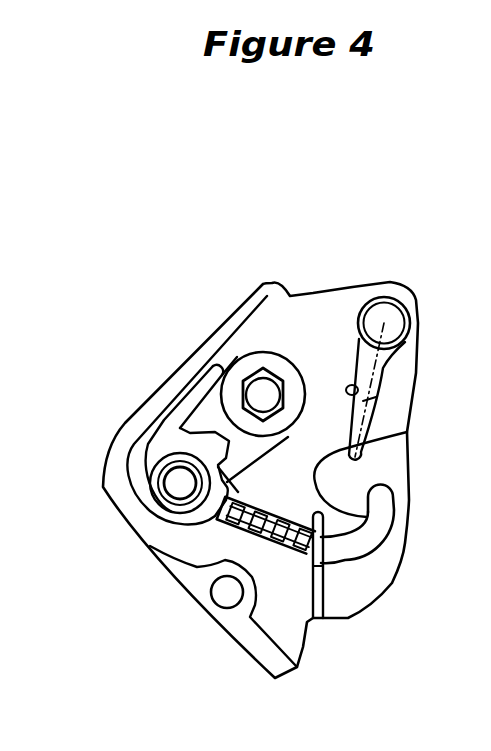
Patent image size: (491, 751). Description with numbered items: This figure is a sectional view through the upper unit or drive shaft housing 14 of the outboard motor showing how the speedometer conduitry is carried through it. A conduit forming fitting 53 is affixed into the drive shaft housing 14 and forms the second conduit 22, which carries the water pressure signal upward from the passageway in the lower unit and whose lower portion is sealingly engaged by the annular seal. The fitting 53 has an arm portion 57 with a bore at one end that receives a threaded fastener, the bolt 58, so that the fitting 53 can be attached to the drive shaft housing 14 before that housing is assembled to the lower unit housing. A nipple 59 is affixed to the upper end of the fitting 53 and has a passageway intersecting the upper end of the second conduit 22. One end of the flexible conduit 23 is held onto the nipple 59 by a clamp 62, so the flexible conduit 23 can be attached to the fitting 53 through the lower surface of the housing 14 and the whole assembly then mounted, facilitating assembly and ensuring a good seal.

The drive shaft housing 14 is at (213, 335).
The conduit forming fitting 53 is at (188, 362).
The arm portion 57 is at (200, 430).
The second conduit 22 is at (178, 483).
The bolt 58 is at (266, 386).
The nipple 59 is at (273, 522).
The clamp 62 is at (263, 563).
The flexible conduit 23 is at (360, 541).